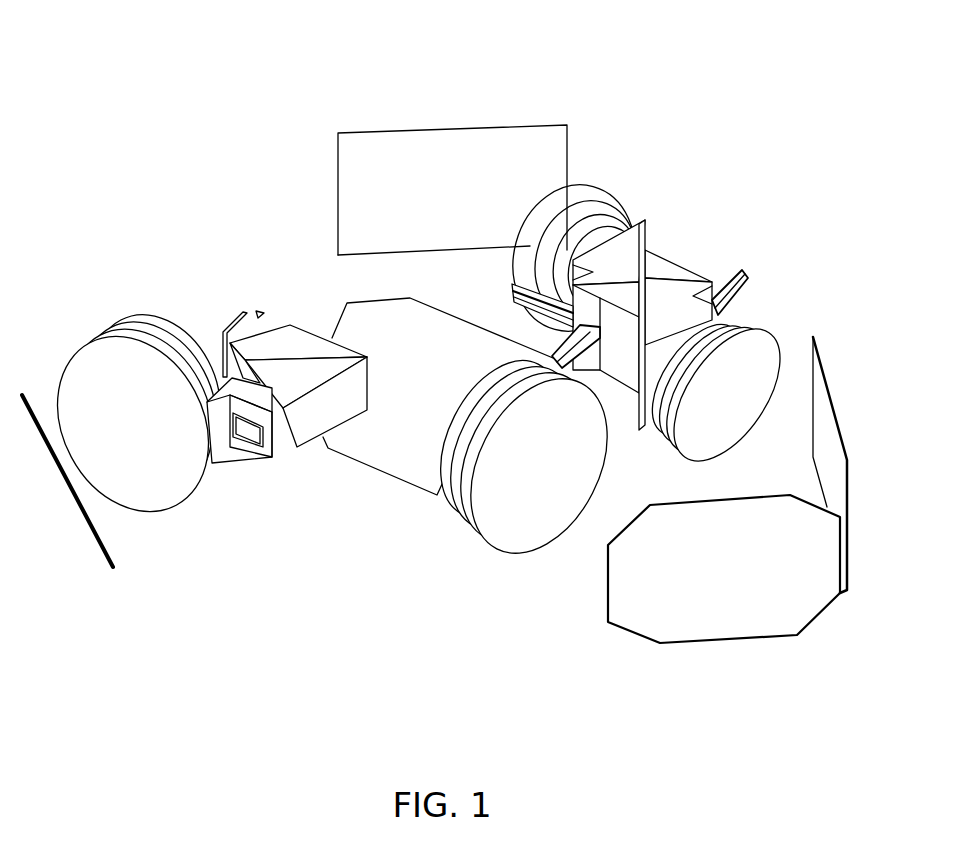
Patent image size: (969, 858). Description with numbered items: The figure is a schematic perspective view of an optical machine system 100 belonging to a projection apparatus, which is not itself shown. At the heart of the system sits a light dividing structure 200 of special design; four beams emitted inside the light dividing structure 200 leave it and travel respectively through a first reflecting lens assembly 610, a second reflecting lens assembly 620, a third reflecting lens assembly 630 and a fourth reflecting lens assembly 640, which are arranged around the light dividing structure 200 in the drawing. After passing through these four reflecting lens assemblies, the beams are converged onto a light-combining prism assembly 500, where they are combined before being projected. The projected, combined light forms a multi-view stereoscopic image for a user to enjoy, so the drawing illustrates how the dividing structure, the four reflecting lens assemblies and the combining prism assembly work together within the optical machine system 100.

The optical machine system 100 is at (98, 46).
The light dividing structure 200 is at (687, 250).
The light-combining prism assembly 500 is at (244, 266).
The first reflecting lens assembly 610 is at (598, 118).
The second reflecting lens assembly 620 is at (837, 335).
The third reflecting lens assembly 630 is at (250, 495).
The fourth reflecting lens assembly 640 is at (366, 508).